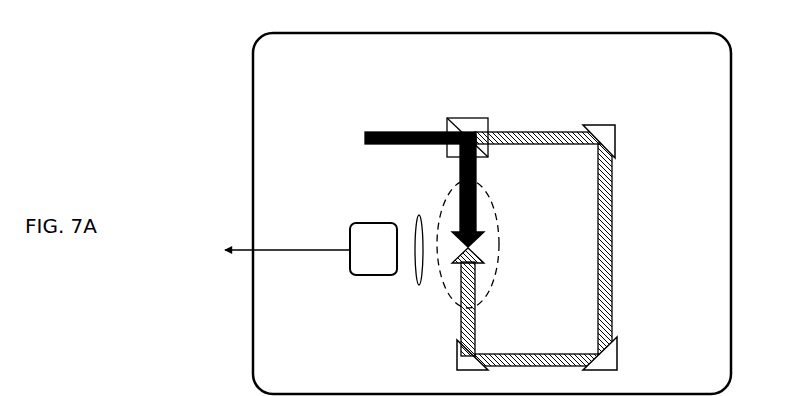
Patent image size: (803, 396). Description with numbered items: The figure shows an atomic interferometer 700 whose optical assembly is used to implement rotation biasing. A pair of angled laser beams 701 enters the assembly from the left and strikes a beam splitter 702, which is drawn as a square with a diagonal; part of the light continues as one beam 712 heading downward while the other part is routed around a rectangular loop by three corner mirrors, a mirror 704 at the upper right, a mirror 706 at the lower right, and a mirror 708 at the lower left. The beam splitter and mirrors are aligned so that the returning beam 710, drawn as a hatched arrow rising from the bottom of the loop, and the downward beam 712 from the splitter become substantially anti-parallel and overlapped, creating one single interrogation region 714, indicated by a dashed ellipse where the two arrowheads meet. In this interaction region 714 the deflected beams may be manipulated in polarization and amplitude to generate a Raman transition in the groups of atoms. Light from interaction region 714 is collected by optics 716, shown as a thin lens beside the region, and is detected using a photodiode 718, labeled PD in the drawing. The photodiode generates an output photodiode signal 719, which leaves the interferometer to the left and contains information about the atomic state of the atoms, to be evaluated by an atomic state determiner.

The atomic interferometer 700 is at (257, 33).
The pair of angled laser beams 701 is at (362, 137).
The beam splitter 702 is at (470, 116).
The mirror 704 is at (605, 121).
The mirror 706 is at (621, 356).
The mirror 708 is at (454, 355).
The return beam 710 is at (479, 323).
The reflected beam 712 is at (479, 168).
The interrogation region 714 is at (500, 245).
The optics 716 is at (419, 211).
The photodiode 718 is at (372, 278).
The output photodiode signal 719 is at (265, 250).